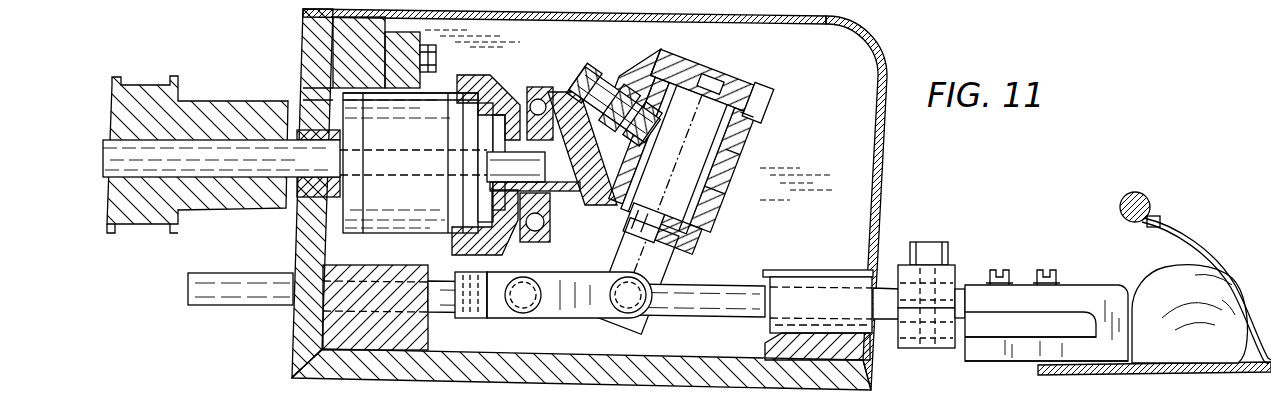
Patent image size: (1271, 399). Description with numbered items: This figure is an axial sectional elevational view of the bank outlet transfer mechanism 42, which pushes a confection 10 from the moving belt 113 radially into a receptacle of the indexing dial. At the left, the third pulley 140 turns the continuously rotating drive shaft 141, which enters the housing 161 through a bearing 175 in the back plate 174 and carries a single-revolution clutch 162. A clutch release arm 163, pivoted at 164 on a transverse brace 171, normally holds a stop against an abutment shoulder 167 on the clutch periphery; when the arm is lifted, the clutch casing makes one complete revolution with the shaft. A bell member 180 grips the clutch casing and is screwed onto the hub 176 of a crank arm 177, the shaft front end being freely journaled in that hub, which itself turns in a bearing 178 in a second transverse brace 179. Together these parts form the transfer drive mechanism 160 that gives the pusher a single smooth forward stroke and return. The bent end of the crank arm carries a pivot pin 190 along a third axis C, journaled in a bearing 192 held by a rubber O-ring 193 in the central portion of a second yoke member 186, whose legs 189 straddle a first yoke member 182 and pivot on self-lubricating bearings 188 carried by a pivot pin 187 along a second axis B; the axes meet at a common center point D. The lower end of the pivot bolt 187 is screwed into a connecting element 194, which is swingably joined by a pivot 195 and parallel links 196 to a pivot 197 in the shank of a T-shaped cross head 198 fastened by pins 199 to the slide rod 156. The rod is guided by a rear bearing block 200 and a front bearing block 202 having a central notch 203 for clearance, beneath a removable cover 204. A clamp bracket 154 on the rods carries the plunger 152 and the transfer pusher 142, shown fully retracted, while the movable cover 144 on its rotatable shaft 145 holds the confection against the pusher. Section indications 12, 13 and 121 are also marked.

The confection 10 is at (1175, 268).
The section line 12 is at (466, 3).
The section line 13 is at (781, 78).
The transfer mechanism 42 is at (995, 214).
The moving belt 113 is at (1153, 372).
The section line 121 is at (604, 396).
The third pulley 140 is at (178, 90).
The drive shaft 141 is at (238, 166).
The transfer pusher 142 is at (1103, 284).
The movable cover 144 is at (1213, 244).
The rotatable shaft 145 is at (1143, 194).
The plunger 152 is at (1042, 328).
The clamp bracket 154 is at (950, 274).
The slide rod 156 is at (735, 316).
The transfer drive mechanism 160 is at (860, 177).
The housing 161 is at (893, 73).
The single-revolution clutch 162 is at (425, 143).
The clutch release arm 163 is at (412, 37).
The pivot 164 is at (437, 52).
The abutment shoulder 167 is at (420, 75).
The transverse brace 171 is at (338, 37).
The back plate 174 is at (312, 73).
The bearing 175 is at (296, 202).
The hub 176 is at (557, 200).
The crank arm 177 is at (566, 108).
The bearing 178 is at (550, 232).
The second transverse brace 179 is at (502, 248).
The bell member 180 is at (473, 88).
The first yoke member 182 is at (684, 95).
The second yoke member 186 is at (676, 50).
The pivot pin 187 is at (770, 106).
The self-lubricating bearings 188 is at (721, 85).
The legs 189 is at (688, 65).
The pivot pin 190 is at (618, 92).
The bearing 192 is at (627, 140).
The rubber O-ring 193 is at (628, 72).
The connecting element 194 is at (676, 268).
The pivot 195 is at (642, 303).
The parallel links 196 is at (585, 306).
The pivot 197 is at (526, 290).
The T-shaped cross head 198 is at (503, 318).
The pins 199 is at (452, 318).
The rear bearing block 200 is at (417, 268).
The front bearing block 202 is at (817, 283).
The central notch 203 is at (838, 335).
The removable cover 204 is at (685, 21).
The second axis B is at (750, 115).
The third axis C is at (722, 188).
The common center point D is at (738, 153).